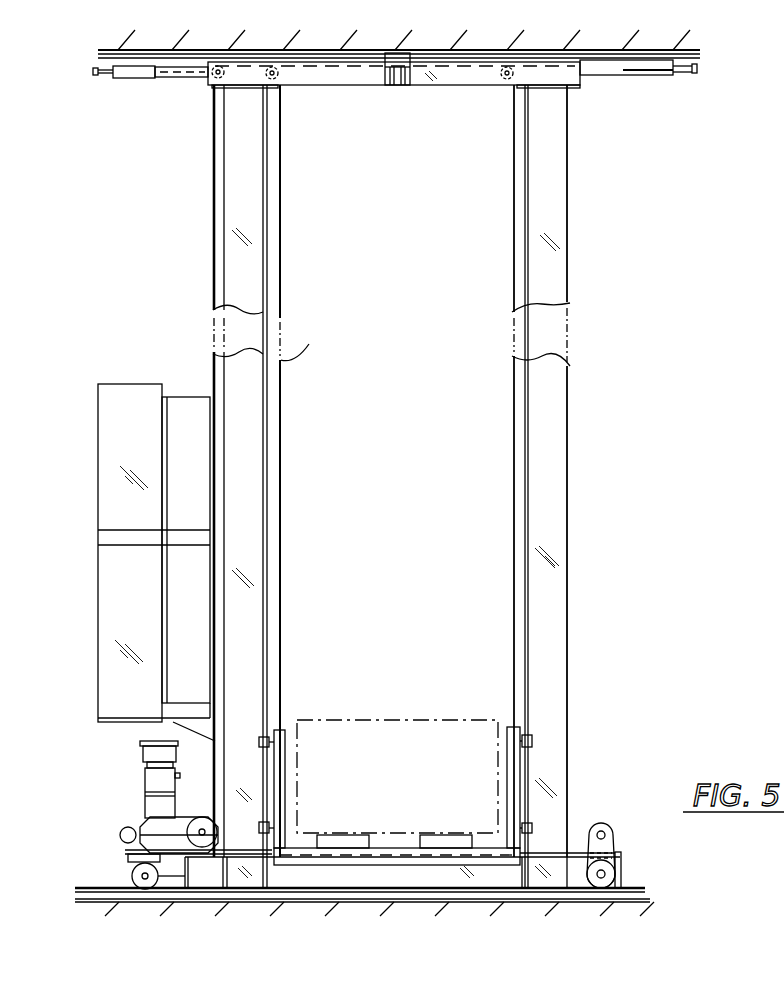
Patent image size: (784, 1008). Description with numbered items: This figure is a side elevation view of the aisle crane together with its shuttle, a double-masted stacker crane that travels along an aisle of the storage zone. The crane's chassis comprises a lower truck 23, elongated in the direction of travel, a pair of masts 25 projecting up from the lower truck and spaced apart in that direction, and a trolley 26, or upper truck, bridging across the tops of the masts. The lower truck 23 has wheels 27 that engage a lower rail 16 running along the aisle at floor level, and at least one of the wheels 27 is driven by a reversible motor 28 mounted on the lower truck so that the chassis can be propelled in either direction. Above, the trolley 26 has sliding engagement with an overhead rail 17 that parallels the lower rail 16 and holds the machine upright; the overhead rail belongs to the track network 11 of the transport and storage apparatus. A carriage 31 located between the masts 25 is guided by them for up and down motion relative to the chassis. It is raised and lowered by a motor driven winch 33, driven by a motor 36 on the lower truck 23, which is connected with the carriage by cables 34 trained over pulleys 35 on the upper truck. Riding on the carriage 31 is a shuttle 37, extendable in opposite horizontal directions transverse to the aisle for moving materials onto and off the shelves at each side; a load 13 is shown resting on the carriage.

The track network 11 is at (698, 51).
The load platform 13 is at (383, 684).
The lower rail 16 is at (116, 890).
The overhead rail 17 is at (156, 63).
The lower truck 23 is at (624, 858).
The masts 25 is at (213, 354).
The trolley 26 is at (327, 86).
The wheels 27 is at (131, 876).
The reversible motor 28 is at (609, 839).
The carriage 31 is at (332, 867).
The motor driven winch 33 is at (203, 822).
The cables 34 is at (213, 222).
The pulleys 35 is at (234, 68).
The motor 36 is at (152, 784).
The shuttle 37 is at (436, 849).